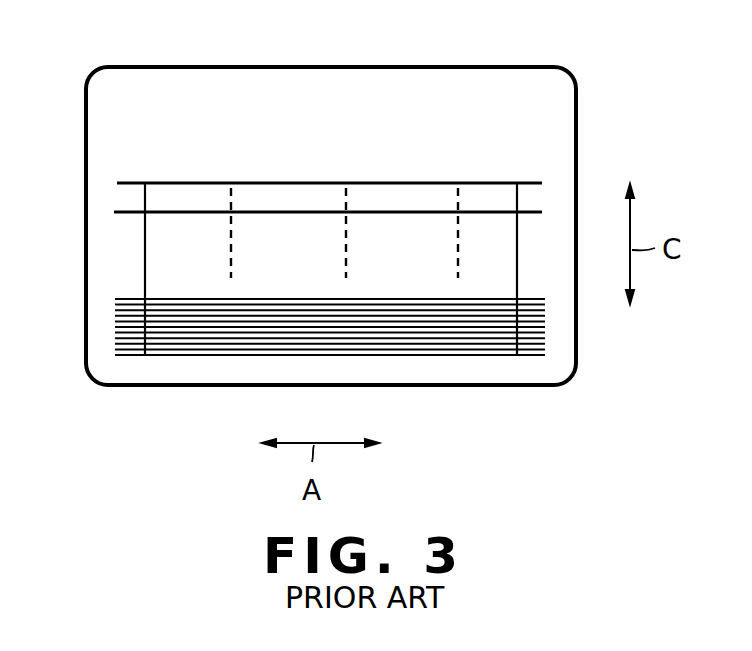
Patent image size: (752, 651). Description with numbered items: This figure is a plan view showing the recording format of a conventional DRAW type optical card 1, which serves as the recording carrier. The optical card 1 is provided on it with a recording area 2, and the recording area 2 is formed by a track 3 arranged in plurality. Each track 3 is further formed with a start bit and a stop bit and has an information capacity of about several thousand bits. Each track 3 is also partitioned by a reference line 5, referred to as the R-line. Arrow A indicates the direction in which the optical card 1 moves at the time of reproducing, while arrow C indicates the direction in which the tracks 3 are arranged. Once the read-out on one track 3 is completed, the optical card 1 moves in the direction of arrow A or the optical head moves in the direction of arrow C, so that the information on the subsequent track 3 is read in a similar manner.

The optical card 1 is at (576, 116).
The recording area 2 is at (121, 259).
The track 3 is at (534, 208).
The reference line 5 is at (123, 184).